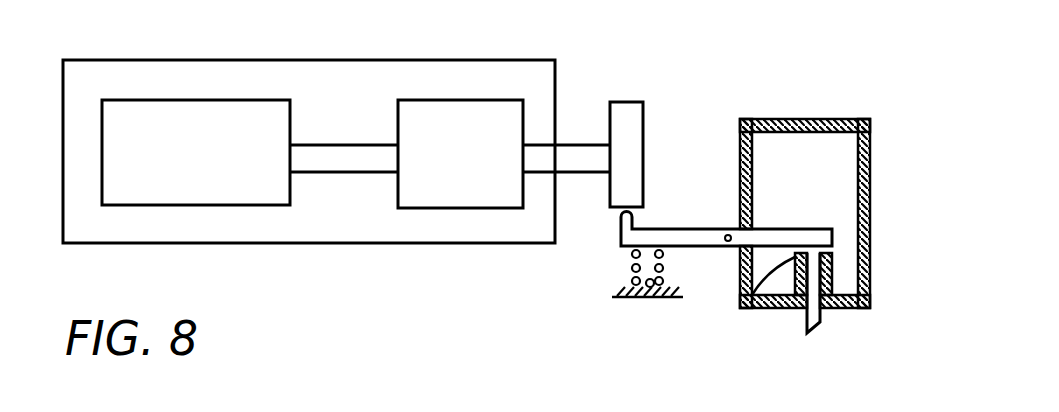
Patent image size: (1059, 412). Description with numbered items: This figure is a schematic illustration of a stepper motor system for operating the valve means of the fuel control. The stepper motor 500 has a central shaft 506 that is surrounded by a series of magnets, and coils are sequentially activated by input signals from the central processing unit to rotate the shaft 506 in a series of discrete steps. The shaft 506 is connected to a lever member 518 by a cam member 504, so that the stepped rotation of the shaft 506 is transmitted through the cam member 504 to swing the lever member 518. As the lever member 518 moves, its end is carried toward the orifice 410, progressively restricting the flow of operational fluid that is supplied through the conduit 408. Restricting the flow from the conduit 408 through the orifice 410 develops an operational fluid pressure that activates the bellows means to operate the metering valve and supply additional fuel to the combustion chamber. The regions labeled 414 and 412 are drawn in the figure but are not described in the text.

The stepper motor 500 is at (220, 100).
The central shaft 506 is at (375, 143).
The cam member 504 is at (610, 123).
The lever member 518 is at (697, 233).
The chamber 414 is at (805, 213).
The chamber wall 412 is at (858, 188).
The orifice 410 is at (742, 297).
The conduit 408 is at (821, 313).